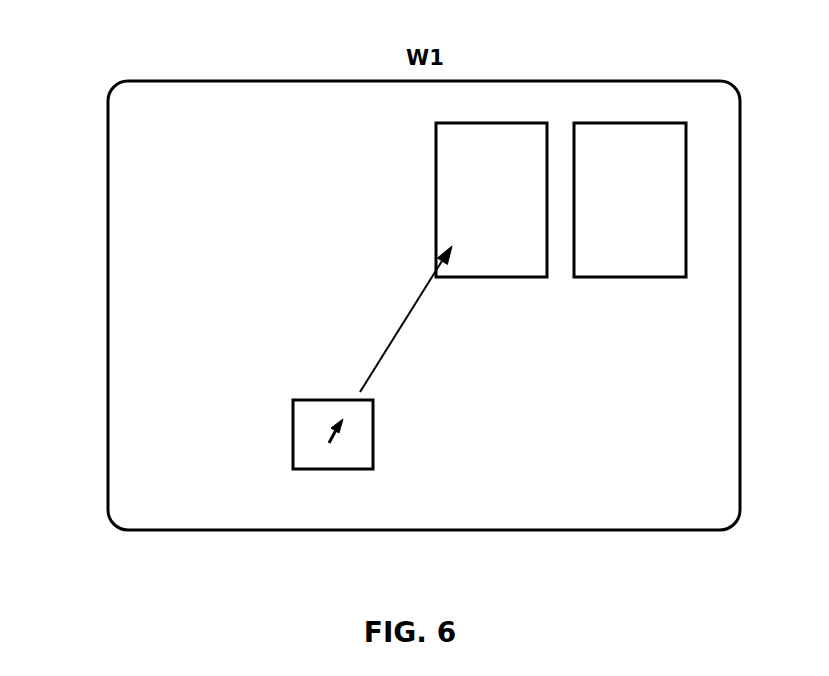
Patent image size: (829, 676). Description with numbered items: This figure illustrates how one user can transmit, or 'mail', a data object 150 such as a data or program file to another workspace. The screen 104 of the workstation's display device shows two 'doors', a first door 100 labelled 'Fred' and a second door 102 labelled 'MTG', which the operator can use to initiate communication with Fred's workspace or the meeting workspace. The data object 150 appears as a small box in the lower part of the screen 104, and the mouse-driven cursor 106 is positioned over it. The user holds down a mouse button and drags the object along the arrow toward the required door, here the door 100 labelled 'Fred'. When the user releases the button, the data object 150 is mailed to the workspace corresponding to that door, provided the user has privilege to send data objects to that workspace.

The door 100 is at (511, 123).
The door 102 is at (651, 123).
The screen 104 is at (108, 205).
The mouse-driven cursor 106 is at (345, 442).
The data object 150 is at (293, 441).